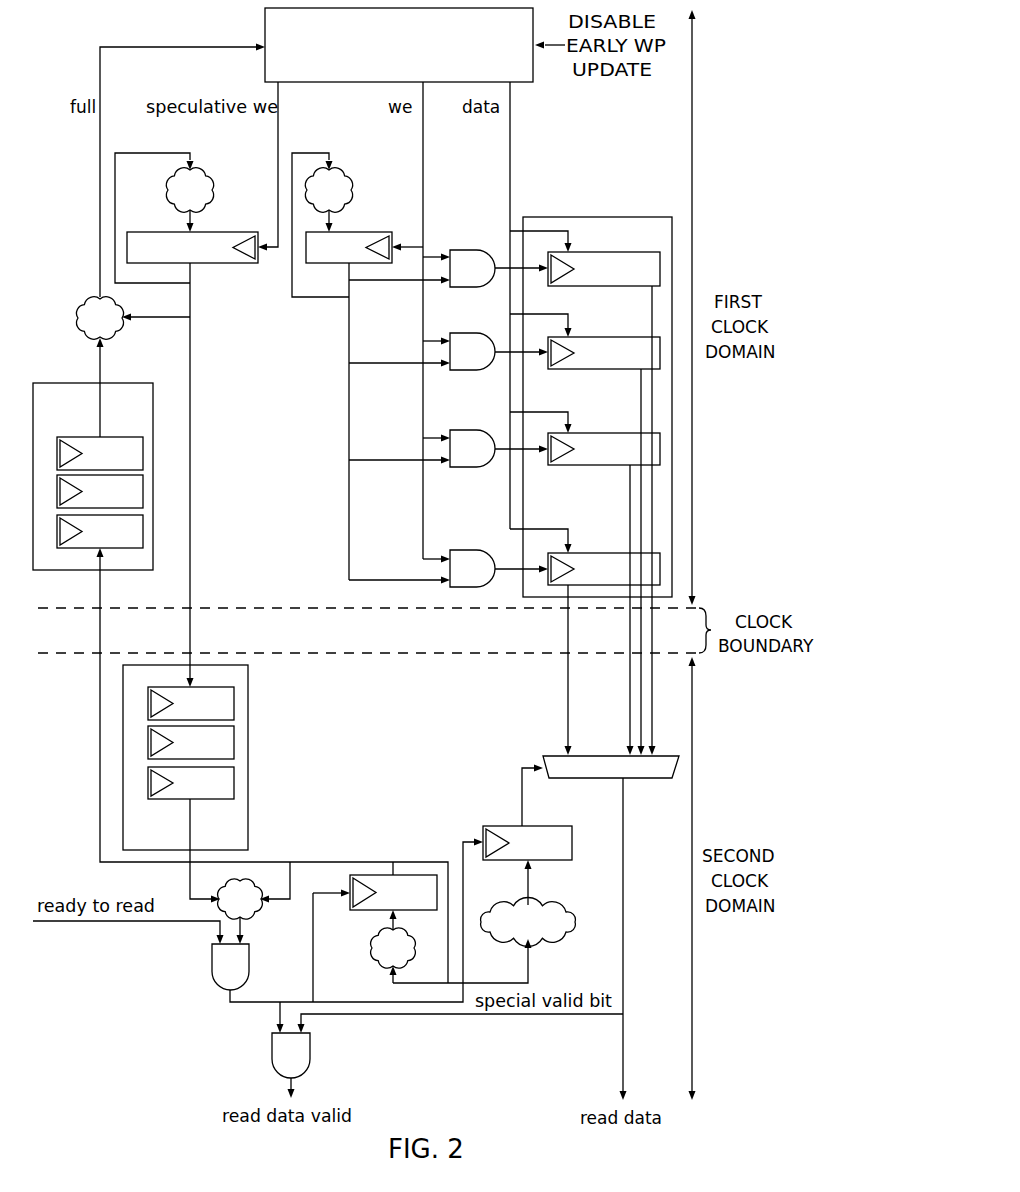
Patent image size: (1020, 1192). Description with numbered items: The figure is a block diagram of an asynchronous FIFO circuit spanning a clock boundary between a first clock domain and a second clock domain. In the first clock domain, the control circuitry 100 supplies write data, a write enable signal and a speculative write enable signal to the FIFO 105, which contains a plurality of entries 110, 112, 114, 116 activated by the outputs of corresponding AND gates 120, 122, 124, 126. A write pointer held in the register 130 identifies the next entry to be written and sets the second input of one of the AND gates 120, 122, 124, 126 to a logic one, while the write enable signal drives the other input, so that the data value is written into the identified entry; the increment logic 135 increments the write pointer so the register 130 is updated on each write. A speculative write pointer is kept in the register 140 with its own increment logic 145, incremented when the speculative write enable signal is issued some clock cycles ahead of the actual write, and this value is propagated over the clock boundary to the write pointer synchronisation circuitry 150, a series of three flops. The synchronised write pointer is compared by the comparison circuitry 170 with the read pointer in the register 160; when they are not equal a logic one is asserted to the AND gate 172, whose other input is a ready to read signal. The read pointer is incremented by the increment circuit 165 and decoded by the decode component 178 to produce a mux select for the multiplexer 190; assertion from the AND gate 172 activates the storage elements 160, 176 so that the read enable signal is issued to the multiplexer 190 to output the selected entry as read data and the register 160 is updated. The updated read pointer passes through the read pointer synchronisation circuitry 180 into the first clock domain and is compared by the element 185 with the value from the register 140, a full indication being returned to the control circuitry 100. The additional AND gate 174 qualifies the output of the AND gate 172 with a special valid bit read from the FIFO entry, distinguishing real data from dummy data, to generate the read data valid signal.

The control circuitry 100 is at (264, 36).
The FIFO 105 is at (617, 203).
The FIFO entry 110 is at (605, 288).
The FIFO entry 112 is at (595, 371).
The FIFO entry 114 is at (608, 468).
The FIFO entry 116 is at (589, 552).
The AND gate 120 is at (470, 252).
The AND gate 122 is at (470, 335).
The AND gate 124 is at (470, 432).
The AND gate 126 is at (470, 551).
The register 130 is at (364, 231).
The increment logic 135 is at (342, 182).
The register 140 is at (213, 265).
The increment logic 145 is at (218, 166).
The write pointer synchronisation circuitry 150 is at (248, 752).
The register 160 is at (370, 912).
The increment circuit 165 is at (378, 963).
The comparison circuitry 170 is at (258, 913).
The AND gate 172 is at (212, 971).
The AND gate 174 is at (310, 1056).
The storage element 176 is at (547, 862).
The decode component 178 is at (546, 939).
The read pointer synchronisation circuitry 180 is at (80, 383).
The comparison element 185 is at (92, 302).
The multiplexer 190 is at (612, 780).